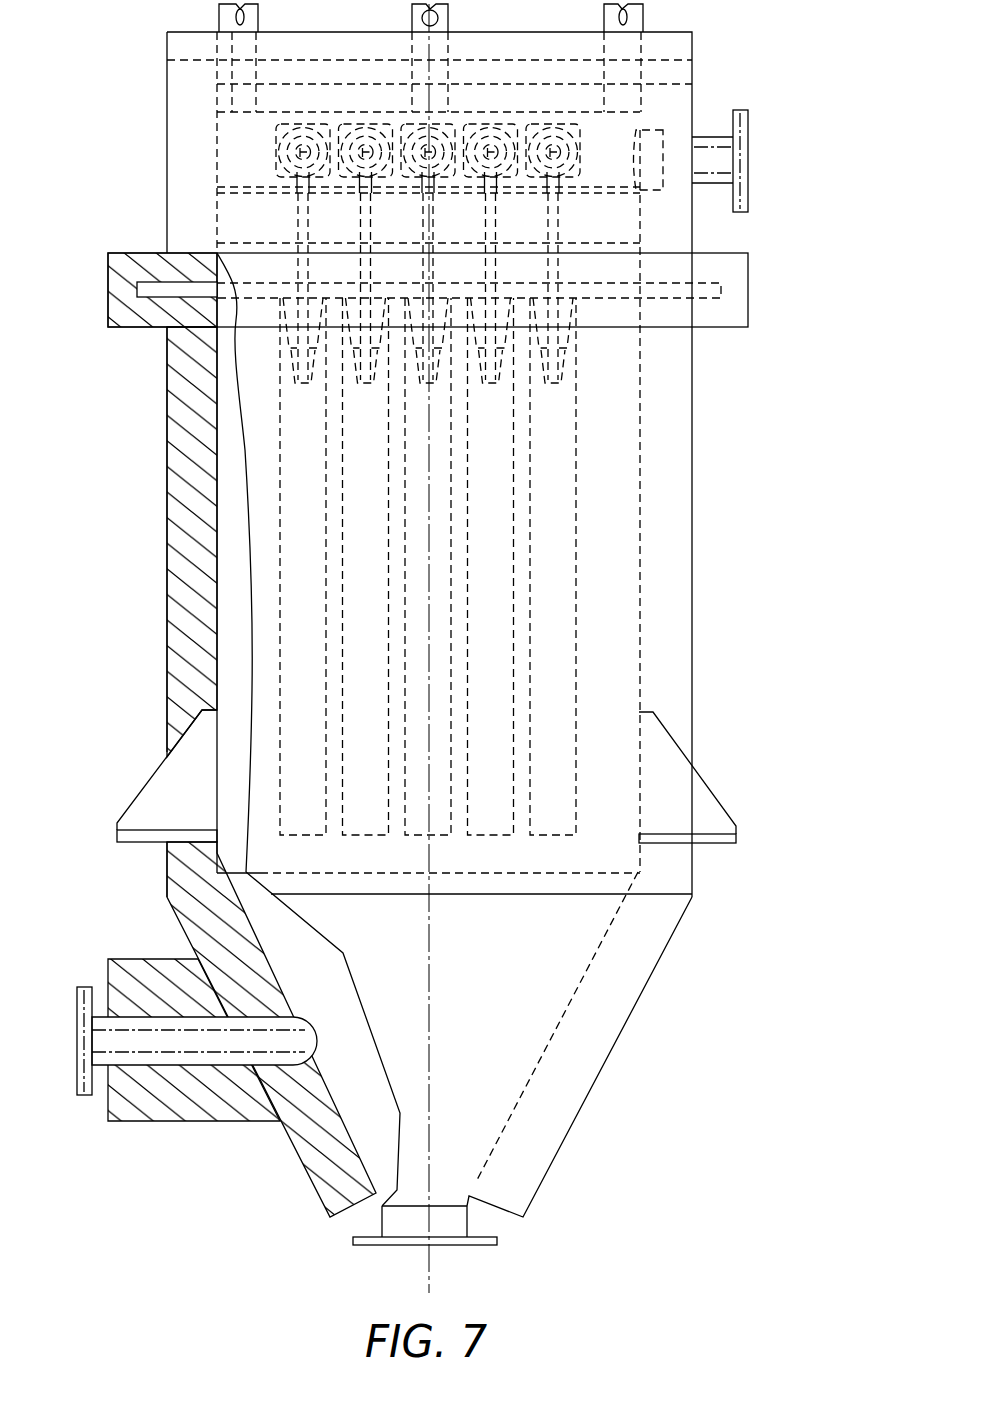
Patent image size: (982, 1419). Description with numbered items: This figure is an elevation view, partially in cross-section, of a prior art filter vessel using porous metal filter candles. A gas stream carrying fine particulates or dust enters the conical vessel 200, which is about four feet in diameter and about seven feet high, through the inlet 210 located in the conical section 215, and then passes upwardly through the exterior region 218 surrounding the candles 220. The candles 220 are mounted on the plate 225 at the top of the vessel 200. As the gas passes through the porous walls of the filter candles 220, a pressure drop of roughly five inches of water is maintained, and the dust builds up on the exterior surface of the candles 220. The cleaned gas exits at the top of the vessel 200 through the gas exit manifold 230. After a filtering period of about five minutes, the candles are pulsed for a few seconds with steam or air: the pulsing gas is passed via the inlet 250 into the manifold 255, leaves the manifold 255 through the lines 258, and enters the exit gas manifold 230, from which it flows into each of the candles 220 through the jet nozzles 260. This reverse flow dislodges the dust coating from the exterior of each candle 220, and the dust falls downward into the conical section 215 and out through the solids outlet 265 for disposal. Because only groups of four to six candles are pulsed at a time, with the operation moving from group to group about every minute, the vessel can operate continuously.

The conical vessel 200 is at (466, 648).
The inlet 210 is at (220, 1050).
The conical section 215 is at (540, 1010).
The exterior region 218 is at (395, 838).
The filter candles 220 is at (513, 765).
The plate 225 is at (250, 283).
The gas exit manifold 230 is at (752, 296).
The inlet 250 is at (748, 163).
The manifold 255 is at (677, 93).
The lines 258 is at (487, 212).
The jet nozzles 260 is at (436, 390).
The solids outlet 265 is at (440, 1230).